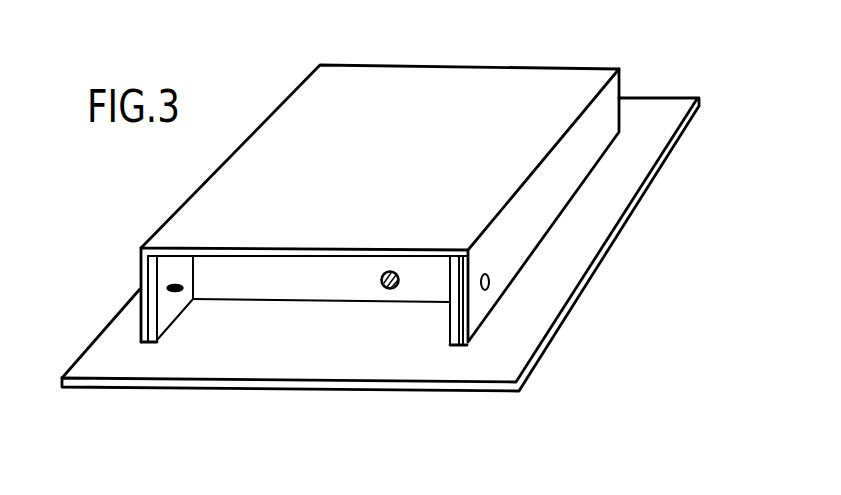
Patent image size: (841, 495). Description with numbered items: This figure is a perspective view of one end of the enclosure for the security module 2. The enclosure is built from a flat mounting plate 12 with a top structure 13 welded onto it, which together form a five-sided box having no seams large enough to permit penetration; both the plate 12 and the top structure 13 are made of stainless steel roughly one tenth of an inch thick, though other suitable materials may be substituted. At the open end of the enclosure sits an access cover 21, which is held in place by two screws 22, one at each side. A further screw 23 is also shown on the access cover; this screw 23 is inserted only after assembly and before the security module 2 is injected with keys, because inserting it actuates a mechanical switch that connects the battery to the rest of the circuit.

The security module 2 is at (440, 65).
The flat mounting plate 12 is at (628, 188).
The top structure 13 is at (530, 84).
The access cover 21 is at (295, 298).
The screws 22 is at (167, 289).
The screw 23 is at (382, 289).